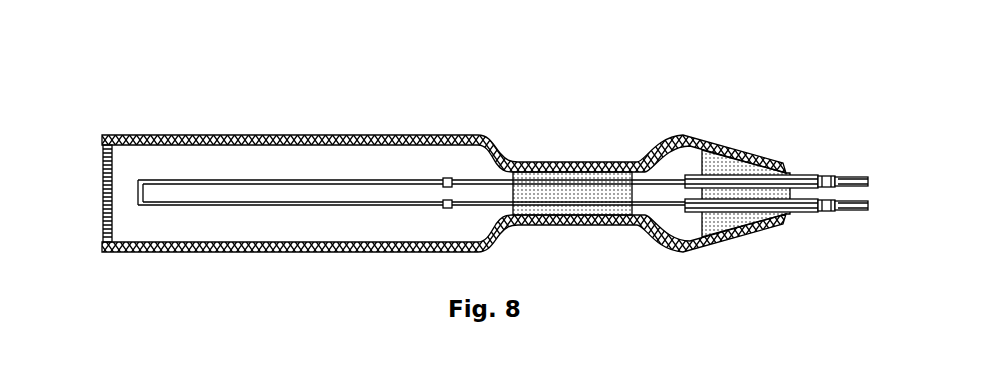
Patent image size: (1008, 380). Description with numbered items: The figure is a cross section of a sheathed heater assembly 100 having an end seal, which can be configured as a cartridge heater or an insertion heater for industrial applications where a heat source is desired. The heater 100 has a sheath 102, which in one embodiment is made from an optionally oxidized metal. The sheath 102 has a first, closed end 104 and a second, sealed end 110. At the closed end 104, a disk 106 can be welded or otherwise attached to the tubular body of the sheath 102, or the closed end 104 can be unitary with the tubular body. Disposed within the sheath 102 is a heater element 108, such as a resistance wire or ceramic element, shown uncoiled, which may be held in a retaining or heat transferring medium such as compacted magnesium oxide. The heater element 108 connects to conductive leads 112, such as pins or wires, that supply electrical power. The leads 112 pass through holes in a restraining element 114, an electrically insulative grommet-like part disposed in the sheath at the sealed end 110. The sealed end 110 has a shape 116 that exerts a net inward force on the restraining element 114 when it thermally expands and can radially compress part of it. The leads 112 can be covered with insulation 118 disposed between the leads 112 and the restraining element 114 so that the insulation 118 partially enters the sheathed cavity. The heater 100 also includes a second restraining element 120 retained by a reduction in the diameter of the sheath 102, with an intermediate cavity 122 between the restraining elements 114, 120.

The sheathed heater assembly 100 is at (255, 115).
The sheath 102 is at (296, 253).
The closed end 104 is at (92, 129).
The disk 106 is at (99, 227).
The heater element 108 is at (190, 206).
The sealed end 110 is at (797, 152).
The conductive leads 112 is at (489, 181).
The restraining element 114 is at (724, 220).
The shape 116 is at (690, 117).
The insulation 118 is at (799, 213).
The second restraining element 120 is at (575, 216).
The intermediate cavity 122 is at (667, 228).